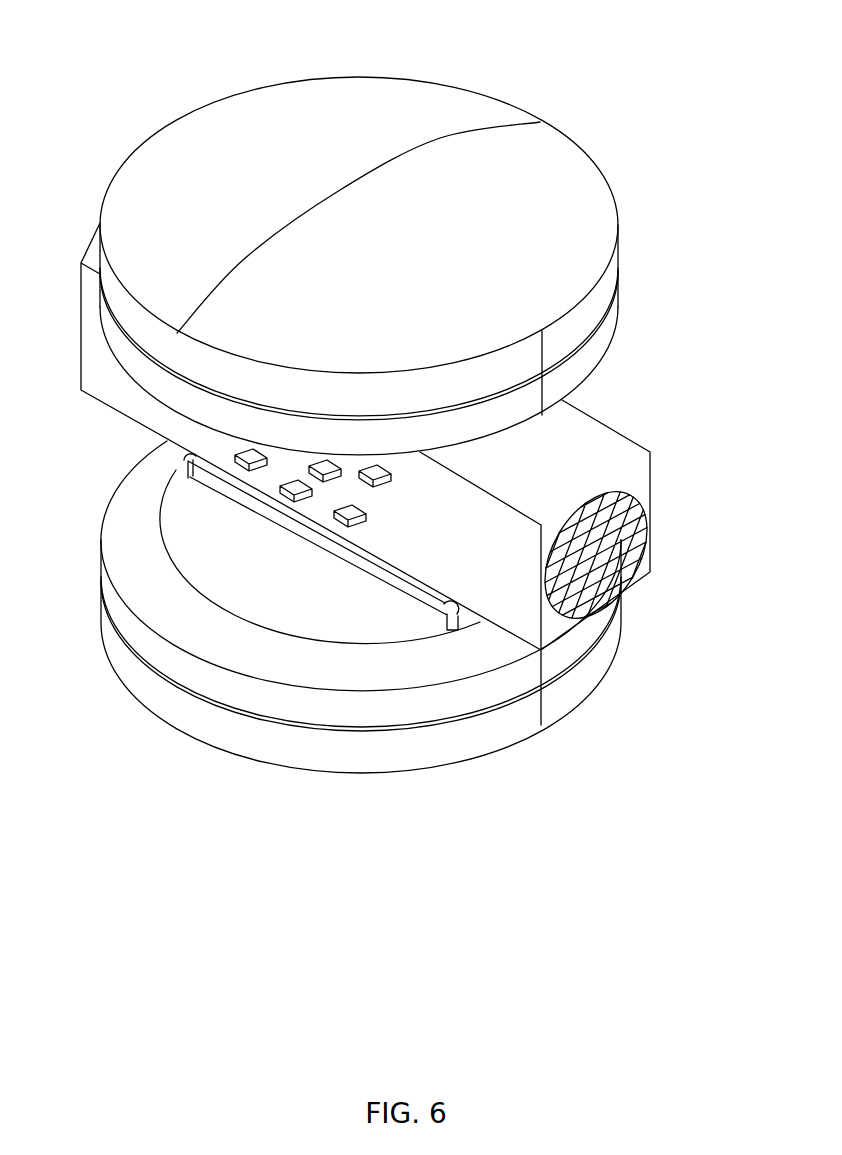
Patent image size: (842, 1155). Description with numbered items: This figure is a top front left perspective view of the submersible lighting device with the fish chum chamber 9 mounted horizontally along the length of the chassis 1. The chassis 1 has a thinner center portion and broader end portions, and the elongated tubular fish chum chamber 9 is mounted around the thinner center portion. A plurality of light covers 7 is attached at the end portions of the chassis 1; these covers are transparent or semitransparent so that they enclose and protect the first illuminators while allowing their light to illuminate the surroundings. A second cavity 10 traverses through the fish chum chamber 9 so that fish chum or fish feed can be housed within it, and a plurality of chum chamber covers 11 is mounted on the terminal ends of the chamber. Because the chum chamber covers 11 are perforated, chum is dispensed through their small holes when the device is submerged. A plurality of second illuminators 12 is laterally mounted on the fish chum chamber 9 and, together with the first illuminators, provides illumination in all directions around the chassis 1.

The chassis 1 is at (604, 342).
The plurality of light covers 7 is at (579, 182).
The fish chum chamber 9 is at (619, 455).
The second cavity 10 is at (624, 553).
The plurality of chum chamber covers 11 is at (613, 576).
The plurality of second illuminators 12 is at (253, 460).